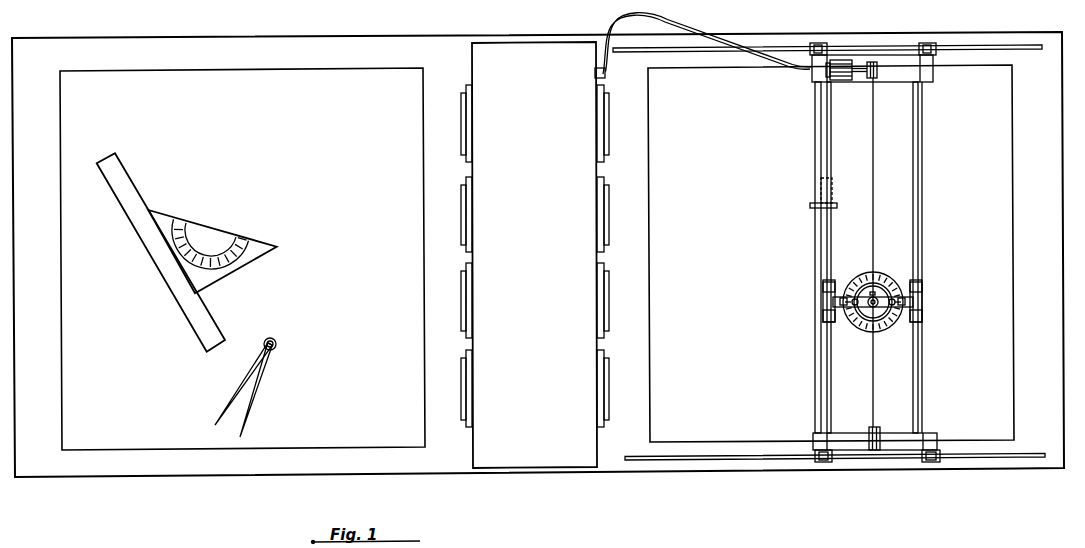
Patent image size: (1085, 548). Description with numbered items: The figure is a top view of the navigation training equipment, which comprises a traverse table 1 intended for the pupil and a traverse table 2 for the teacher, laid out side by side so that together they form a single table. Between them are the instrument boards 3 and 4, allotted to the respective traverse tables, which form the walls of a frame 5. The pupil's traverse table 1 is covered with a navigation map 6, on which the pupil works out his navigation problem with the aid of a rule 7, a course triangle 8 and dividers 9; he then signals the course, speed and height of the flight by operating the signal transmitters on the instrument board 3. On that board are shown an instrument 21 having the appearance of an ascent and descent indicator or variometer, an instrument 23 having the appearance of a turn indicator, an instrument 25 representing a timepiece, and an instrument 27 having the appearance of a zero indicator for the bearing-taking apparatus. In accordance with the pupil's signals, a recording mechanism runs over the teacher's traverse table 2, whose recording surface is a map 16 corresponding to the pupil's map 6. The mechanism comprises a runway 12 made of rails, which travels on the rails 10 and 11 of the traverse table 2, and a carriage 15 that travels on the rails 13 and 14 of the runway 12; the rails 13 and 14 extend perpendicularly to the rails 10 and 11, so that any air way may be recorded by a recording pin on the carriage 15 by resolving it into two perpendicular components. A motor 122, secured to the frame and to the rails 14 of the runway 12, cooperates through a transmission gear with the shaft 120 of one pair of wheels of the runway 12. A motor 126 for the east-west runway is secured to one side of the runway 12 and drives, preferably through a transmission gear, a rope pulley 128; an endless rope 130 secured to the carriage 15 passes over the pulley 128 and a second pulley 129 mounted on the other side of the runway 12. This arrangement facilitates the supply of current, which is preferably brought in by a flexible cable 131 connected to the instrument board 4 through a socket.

The traverse table 1 is at (197, 39).
The traverse table 2 is at (1035, 85).
The instrument board 3 is at (471, 54).
The instrument board 4 is at (597, 65).
The frame 5 is at (534, 255).
The navigation map 6 is at (352, 70).
The rule 7 is at (127, 180).
The course triangle 8 is at (265, 243).
The dividers 9 is at (268, 375).
The rail 10 is at (763, 49).
The rail 11 is at (765, 460).
The runway 12 is at (928, 80).
The rail 13 is at (918, 172).
The rail 14 is at (827, 172).
The carriage 15 is at (917, 302).
The map 16 is at (1012, 191).
The instrument 21 is at (464, 150).
The instrument 23 is at (464, 240).
The instrument 25 is at (464, 329).
The instrument 27 is at (464, 418).
The shaft 120 is at (815, 236).
The motor 122 is at (822, 186).
The motor 126 is at (840, 60).
The rope pulley 128 is at (877, 60).
The second pulley 129 is at (882, 428).
The endless rope 130 is at (873, 128).
The flexible cable 131 is at (673, 25).